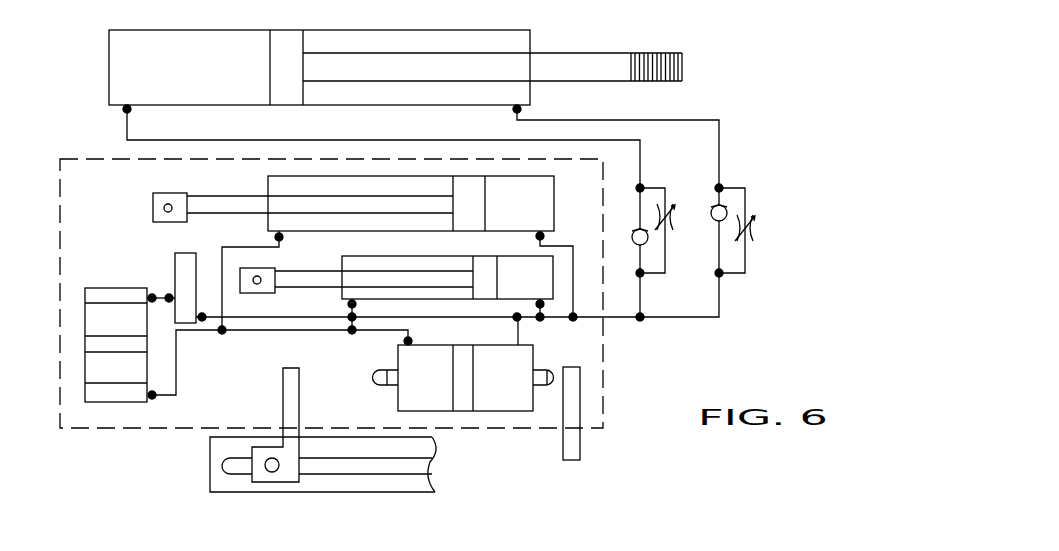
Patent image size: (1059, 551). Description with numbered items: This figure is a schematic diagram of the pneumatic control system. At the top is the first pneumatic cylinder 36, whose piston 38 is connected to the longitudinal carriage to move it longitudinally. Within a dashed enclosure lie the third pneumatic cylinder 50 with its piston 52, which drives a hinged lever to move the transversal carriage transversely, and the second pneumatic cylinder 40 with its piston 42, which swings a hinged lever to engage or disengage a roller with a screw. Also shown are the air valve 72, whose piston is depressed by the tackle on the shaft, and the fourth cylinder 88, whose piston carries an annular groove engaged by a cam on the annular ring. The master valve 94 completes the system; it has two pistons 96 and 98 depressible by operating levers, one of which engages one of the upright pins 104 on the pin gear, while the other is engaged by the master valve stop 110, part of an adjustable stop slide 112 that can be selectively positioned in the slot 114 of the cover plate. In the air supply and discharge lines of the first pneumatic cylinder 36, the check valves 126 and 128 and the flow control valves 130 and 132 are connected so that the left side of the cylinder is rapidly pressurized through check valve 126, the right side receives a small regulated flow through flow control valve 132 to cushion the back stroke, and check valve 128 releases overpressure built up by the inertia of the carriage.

The first pneumatic cylinder 36 is at (130, 62).
The piston 38 is at (582, 62).
The control valve 40 is at (543, 283).
The piston 42 is at (302, 280).
The third pneumatic cylinder 50 is at (285, 190).
The piston 52 is at (225, 207).
The air valve 72 is at (183, 267).
The fourth cylinder 88 is at (95, 322).
The master valve 94 is at (503, 402).
The piston 96 is at (387, 382).
The piston 98 is at (553, 377).
The upright pins 104 is at (572, 446).
The master valve stop 110 is at (288, 393).
The adjustable stop slide 112 is at (260, 477).
The slot 114 is at (326, 462).
The check valve 126 is at (645, 240).
The check valve 128 is at (723, 207).
The flow control valve 130 is at (672, 213).
The flow control valve 132 is at (748, 227).